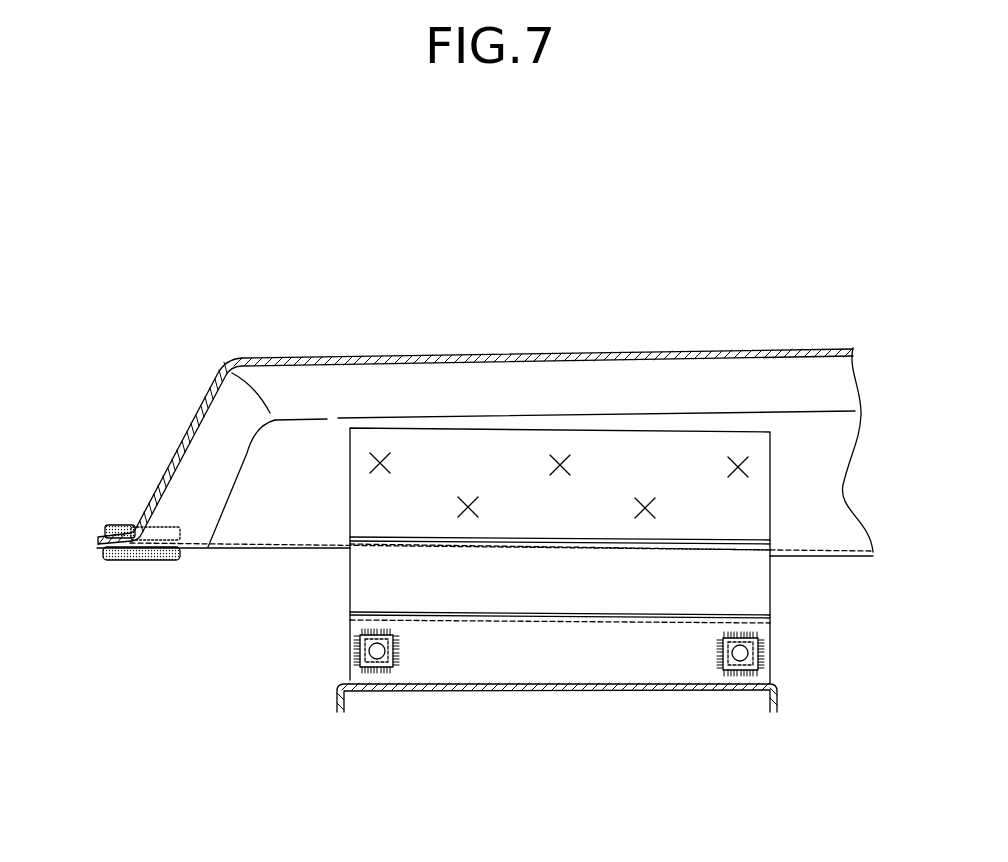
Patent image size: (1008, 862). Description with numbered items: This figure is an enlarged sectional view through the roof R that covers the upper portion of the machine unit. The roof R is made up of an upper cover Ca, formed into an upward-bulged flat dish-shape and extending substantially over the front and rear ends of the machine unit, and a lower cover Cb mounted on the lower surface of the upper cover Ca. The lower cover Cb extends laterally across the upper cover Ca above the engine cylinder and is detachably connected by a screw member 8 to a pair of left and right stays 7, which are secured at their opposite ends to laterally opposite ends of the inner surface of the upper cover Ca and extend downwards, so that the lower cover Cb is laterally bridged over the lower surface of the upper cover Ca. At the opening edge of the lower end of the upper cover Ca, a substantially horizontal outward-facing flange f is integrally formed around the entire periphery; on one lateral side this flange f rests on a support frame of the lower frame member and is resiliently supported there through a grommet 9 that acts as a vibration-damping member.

The roof R is at (485, 393).
The upper cover Ca is at (538, 352).
The lower cover Cb is at (675, 695).
The flange f is at (100, 540).
The stay 7 is at (760, 508).
The screw member 8 is at (375, 648).
The grommet 9 is at (118, 562).